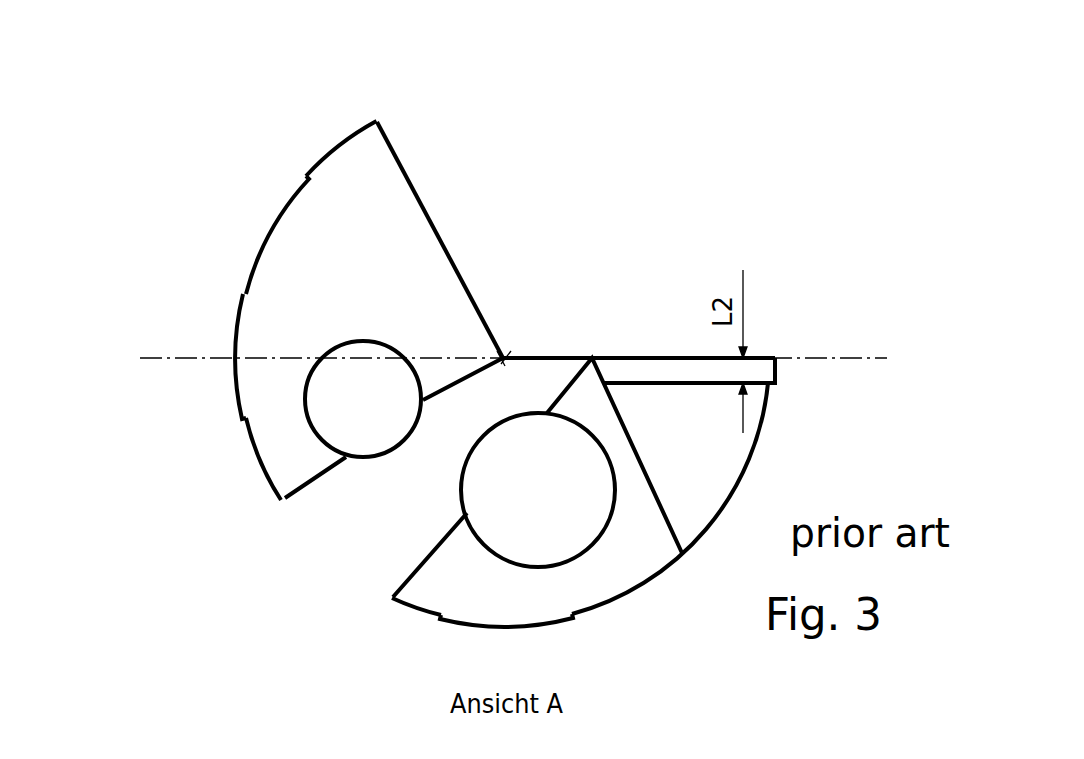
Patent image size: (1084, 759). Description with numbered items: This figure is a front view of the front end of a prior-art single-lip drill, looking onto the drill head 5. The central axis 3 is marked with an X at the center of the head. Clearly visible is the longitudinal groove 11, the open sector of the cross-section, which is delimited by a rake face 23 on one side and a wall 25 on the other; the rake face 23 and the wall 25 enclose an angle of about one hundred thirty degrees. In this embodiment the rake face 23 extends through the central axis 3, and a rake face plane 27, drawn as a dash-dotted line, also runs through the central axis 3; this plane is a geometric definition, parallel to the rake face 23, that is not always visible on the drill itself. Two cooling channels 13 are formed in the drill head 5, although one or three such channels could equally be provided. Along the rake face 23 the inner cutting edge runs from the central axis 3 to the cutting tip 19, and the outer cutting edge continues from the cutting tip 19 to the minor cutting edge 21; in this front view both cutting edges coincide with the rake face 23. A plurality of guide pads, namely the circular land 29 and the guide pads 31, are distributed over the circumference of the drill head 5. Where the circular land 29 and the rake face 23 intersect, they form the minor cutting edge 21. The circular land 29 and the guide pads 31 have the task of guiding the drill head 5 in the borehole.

The central axis 3 is at (503, 356).
The drill head 5 is at (183, 332).
The longitudinal groove 11 is at (607, 182).
The cooling channel 13 is at (498, 540).
The cutting tip 19 is at (590, 357).
The minor cutting edge 21 is at (775, 358).
The rake face 23 is at (557, 357).
The wall 25 is at (422, 212).
The rake face plane 27 is at (200, 359).
The circular land 29 is at (777, 375).
The guide pads 31 is at (232, 315).